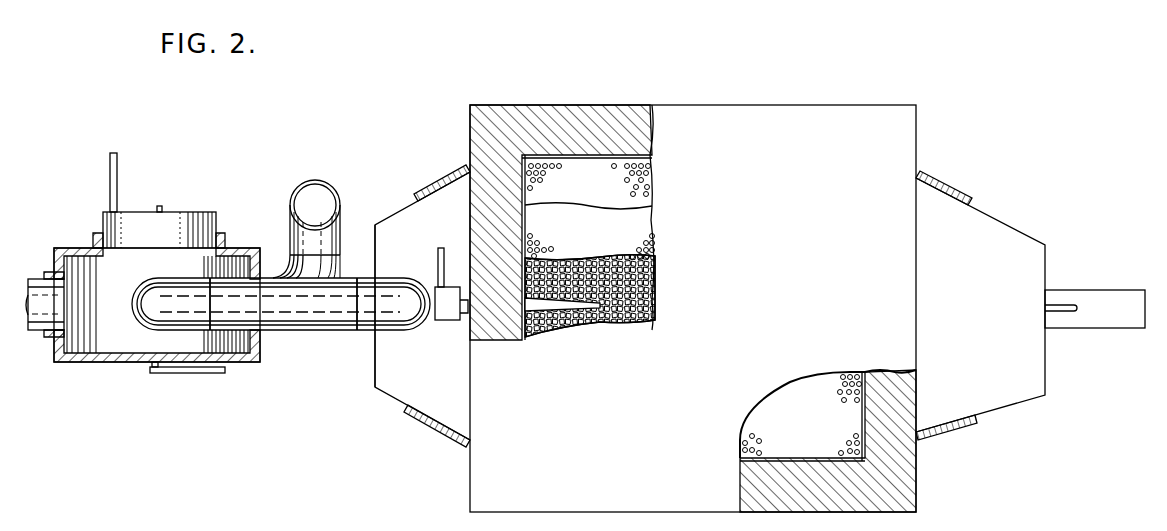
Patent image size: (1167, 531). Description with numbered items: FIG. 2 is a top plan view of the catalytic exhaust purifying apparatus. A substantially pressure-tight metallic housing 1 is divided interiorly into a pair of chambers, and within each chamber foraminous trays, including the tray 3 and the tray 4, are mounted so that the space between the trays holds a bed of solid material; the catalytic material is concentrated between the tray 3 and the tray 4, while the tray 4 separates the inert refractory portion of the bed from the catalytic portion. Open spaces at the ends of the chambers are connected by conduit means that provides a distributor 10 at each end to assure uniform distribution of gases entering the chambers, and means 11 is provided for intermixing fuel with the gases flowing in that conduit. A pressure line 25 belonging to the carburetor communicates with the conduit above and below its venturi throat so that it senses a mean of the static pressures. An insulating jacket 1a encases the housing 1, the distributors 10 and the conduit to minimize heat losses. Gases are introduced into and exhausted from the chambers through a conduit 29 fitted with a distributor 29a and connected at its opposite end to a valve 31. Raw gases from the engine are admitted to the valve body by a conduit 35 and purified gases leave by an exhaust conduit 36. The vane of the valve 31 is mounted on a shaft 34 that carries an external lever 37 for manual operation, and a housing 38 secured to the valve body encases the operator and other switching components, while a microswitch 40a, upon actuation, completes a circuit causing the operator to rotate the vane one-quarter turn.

The insulating jacket 1a is at (600, 112).
The metallic housing 1 is at (567, 158).
The foraminous tray 3 is at (693, 310).
The foraminous tray 4 is at (590, 282).
The distributor 10 is at (1000, 223).
The fuel intermixing means 11 is at (1114, 281).
The pressure line 25 is at (1060, 305).
The conduit 29 is at (298, 330).
The distributor 29a is at (396, 218).
The valve 31 is at (116, 370).
The shaft 34 is at (158, 206).
The conduit 35 is at (33, 333).
The exhaust conduit 36 is at (291, 215).
The lever 37 is at (207, 373).
The housing 38 is at (186, 212).
The microswitch 40a is at (448, 320).